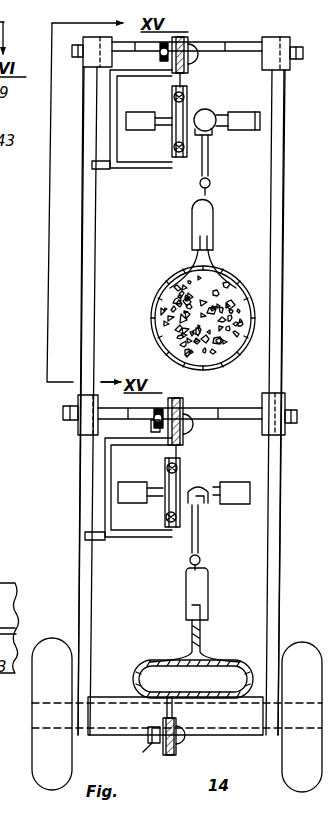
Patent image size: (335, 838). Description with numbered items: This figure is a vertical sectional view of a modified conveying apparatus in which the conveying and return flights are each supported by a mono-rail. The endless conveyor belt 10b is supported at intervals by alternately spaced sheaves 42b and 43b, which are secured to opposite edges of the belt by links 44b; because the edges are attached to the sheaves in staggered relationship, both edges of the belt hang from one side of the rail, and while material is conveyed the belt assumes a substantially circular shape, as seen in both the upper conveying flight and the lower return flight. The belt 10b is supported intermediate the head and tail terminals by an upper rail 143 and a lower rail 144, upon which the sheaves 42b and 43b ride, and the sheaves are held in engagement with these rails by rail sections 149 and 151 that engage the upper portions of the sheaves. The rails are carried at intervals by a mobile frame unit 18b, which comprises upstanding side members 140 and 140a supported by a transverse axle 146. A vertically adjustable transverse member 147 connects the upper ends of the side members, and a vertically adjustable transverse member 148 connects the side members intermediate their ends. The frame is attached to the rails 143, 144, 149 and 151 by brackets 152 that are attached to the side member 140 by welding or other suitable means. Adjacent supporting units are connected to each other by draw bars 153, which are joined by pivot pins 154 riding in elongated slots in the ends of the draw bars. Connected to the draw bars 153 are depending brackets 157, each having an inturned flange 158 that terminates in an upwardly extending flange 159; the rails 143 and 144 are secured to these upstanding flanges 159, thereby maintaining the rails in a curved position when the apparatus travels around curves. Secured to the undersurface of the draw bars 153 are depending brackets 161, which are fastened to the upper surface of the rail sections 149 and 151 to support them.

The endless conveyor belt 10b is at (243, 256).
The mobile frame unit 18b is at (282, 299).
The sheave 42b is at (170, 135).
The sheave 43b is at (181, 471).
The link 44b is at (212, 162).
The side member 140 is at (82, 449).
The side member 140a is at (276, 478).
The upper rail 143 is at (184, 147).
The lower rail 144 is at (165, 517).
The transverse axle 146 is at (268, 717).
The vertically adjustable transverse member 147 is at (239, 52).
The vertically adjustable transverse member 148 is at (176, 466).
The rail section 149 is at (183, 94).
The rail section 151 is at (242, 409).
The bracket 152 is at (100, 170).
The draw bar 153 is at (177, 410).
The pivot pin 154 is at (156, 431).
The depending bracket 157 is at (110, 122).
The inturned flange 158 is at (128, 170).
The upwardly extending flange 159 is at (183, 156).
The depending bracket 161 is at (172, 83).